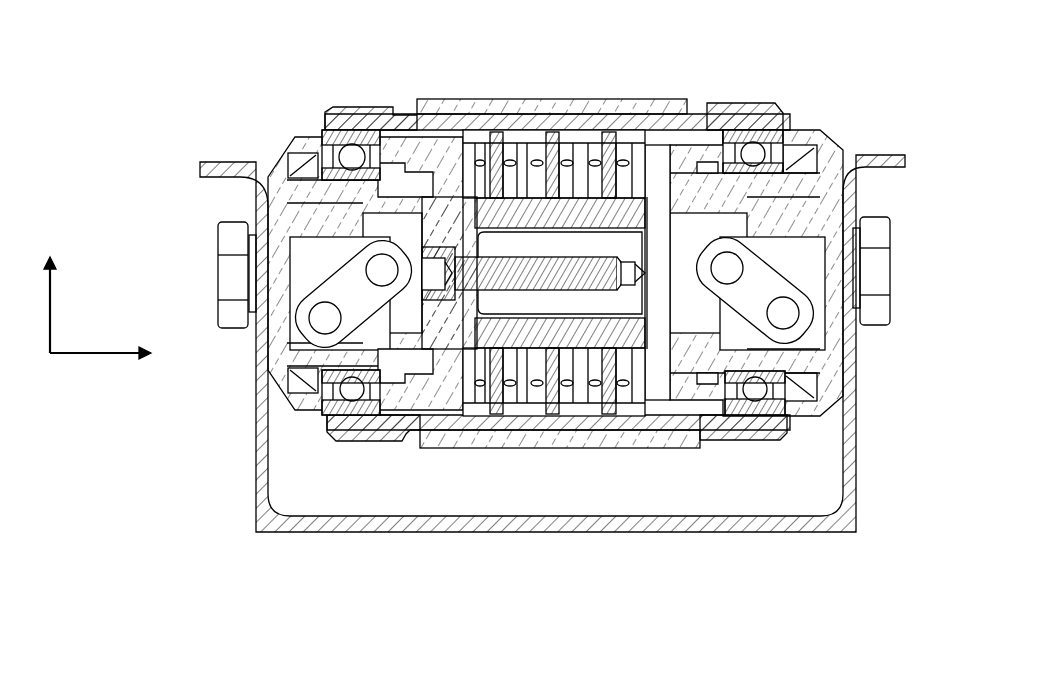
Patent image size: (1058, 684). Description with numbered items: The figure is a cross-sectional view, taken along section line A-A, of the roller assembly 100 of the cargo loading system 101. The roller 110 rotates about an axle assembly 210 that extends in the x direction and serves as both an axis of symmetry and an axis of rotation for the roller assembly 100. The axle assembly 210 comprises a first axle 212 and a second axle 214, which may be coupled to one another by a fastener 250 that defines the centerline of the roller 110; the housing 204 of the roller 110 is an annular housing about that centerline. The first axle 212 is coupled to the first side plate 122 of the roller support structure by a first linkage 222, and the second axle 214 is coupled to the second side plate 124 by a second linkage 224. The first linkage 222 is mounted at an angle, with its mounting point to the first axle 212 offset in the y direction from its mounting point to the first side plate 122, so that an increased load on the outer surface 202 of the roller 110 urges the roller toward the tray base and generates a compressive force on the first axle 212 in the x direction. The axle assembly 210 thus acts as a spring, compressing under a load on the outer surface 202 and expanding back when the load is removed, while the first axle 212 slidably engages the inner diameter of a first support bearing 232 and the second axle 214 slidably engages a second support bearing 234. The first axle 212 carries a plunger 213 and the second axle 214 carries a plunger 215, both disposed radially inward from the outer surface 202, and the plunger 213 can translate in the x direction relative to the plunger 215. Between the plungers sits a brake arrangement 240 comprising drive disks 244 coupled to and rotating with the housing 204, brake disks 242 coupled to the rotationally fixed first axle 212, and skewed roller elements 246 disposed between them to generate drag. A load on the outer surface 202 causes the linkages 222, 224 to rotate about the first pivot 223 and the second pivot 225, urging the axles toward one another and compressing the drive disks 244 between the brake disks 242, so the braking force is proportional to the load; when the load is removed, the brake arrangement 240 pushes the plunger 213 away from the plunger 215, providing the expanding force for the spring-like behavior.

The roller assembly 100 is at (166, 128).
The cargo loading system 101 is at (217, 108).
The roller 110 is at (493, 83).
The first side plate 122 is at (298, 205).
The second side plate 124 is at (810, 222).
The outer surface 202 is at (655, 99).
The housing 204 is at (742, 113).
The axle assembly 210 is at (503, 208).
The first axle 212 is at (312, 222).
The plunger 213 is at (430, 207).
The second axle 214 is at (657, 213).
The plunger 215 is at (657, 165).
The first linkage 222 is at (365, 258).
The first pivot 223 is at (330, 318).
The second linkage 224 is at (727, 247).
The second pivot 225 is at (783, 315).
The first support bearing 232 is at (337, 398).
The second support bearing 234 is at (770, 402).
The brake arrangement 240 is at (526, 131).
The brake disks 242 is at (586, 152).
The drive disks 244 is at (612, 140).
The skewed roller elements 246 is at (549, 152).
The fastener 250 is at (447, 300).